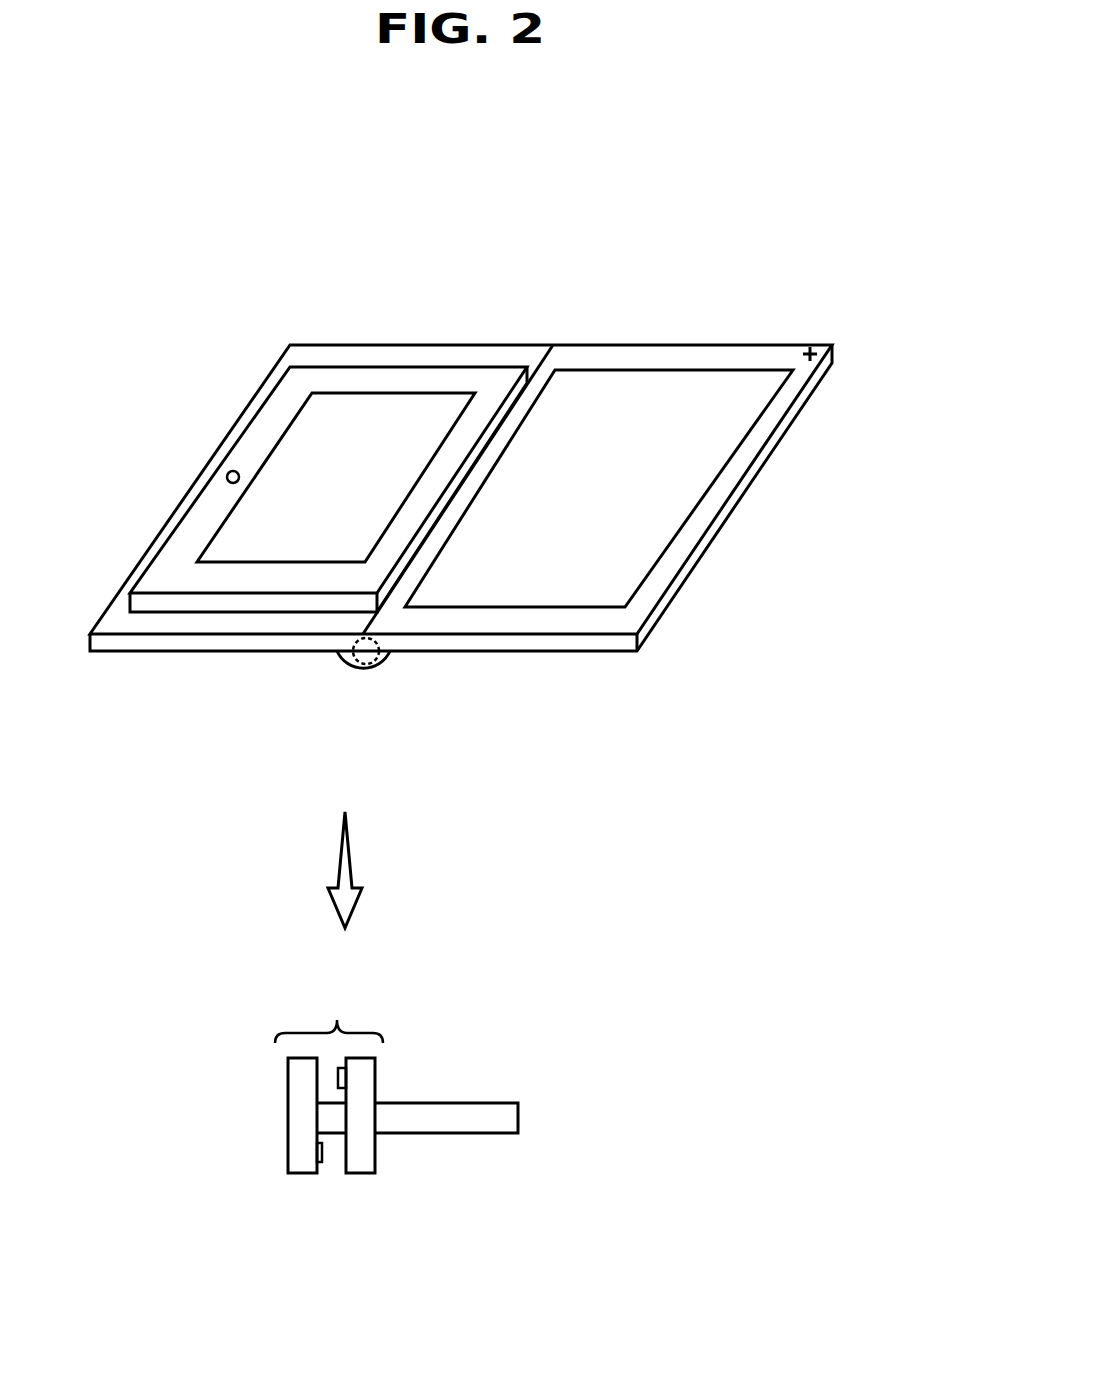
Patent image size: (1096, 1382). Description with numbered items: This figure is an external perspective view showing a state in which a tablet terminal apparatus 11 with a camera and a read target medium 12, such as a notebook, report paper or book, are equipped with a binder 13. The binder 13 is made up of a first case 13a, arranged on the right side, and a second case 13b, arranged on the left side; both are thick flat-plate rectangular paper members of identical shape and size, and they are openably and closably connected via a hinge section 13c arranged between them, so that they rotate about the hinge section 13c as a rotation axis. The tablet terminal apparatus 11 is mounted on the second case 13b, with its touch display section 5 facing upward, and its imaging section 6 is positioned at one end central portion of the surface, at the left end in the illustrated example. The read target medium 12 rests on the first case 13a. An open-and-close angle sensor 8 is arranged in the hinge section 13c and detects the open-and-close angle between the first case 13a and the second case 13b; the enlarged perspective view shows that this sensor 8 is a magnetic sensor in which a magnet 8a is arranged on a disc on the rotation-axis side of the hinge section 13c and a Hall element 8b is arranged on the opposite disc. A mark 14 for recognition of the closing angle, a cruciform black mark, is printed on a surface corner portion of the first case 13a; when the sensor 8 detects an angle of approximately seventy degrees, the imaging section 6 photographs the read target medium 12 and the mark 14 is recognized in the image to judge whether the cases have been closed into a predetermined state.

The touch display section 5 is at (373, 443).
The imaging section 6 is at (227, 478).
The open-and-close angle sensor 8 is at (366, 664).
The magnet 8a is at (345, 1075).
The Hall element 8b is at (322, 1160).
The tablet terminal apparatus 11 is at (495, 356).
The read target medium 12 is at (600, 412).
The binder 13 is at (548, 668).
The first case 13a is at (622, 647).
The second case 13b is at (145, 643).
The hinge section 13c is at (555, 1062).
The mark for recognition of closing angle 14 is at (811, 345).